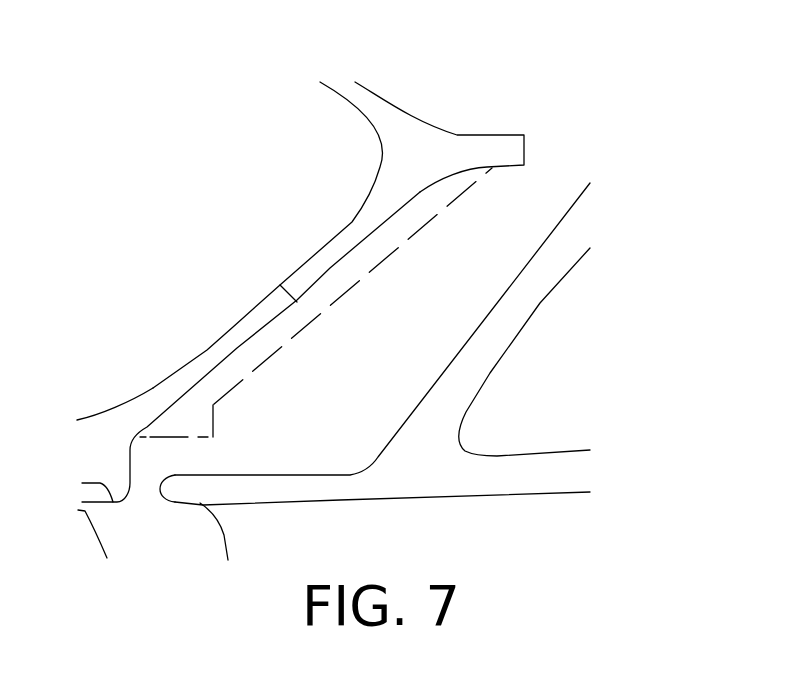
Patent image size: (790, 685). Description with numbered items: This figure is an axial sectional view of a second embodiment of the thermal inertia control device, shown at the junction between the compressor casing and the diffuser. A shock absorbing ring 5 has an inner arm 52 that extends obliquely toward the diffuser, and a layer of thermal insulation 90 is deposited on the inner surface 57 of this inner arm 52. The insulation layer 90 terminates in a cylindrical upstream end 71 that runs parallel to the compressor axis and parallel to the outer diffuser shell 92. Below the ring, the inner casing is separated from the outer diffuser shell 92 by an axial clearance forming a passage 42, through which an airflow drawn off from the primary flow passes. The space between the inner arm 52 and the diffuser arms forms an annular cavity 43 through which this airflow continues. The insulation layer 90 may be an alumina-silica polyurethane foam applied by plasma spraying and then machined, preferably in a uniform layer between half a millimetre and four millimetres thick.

The shock absorbing ring 5 is at (447, 129).
The inner surface 57 is at (397, 213).
The inner arm 52 is at (318, 256).
The cylindrical upstream end 71 is at (193, 418).
The layer of thermal insulation 90 is at (373, 248).
The annular cavity 43 is at (298, 436).
The outer diffuser shell 92 is at (523, 480).
The passage 42 is at (140, 490).